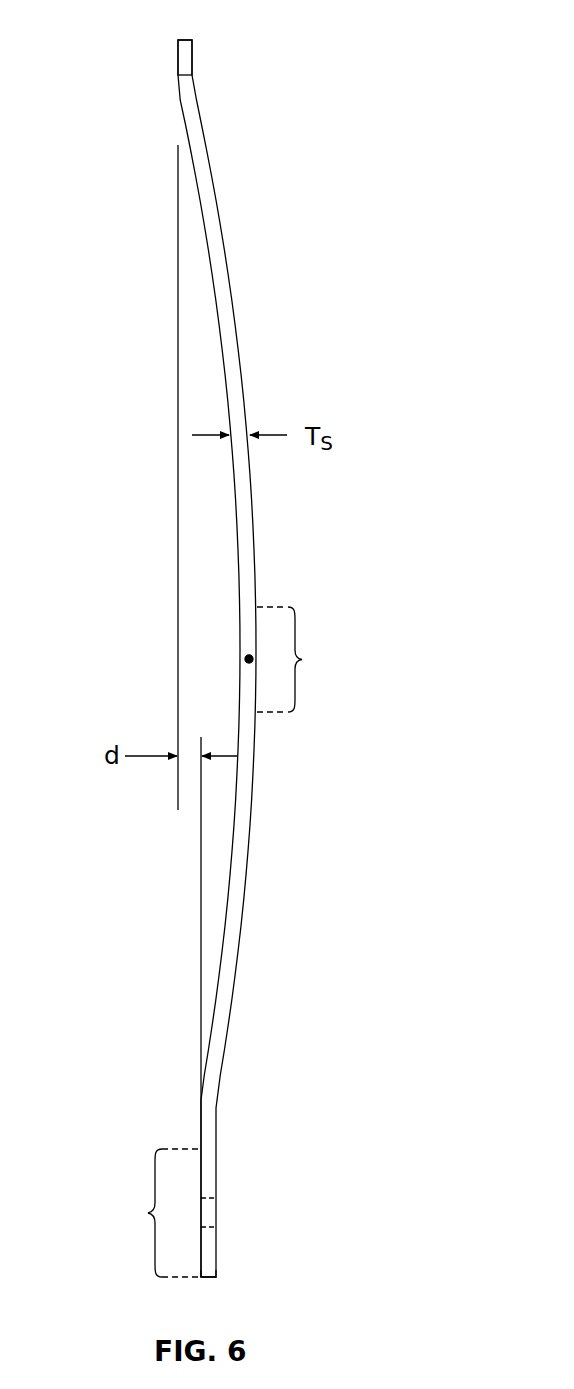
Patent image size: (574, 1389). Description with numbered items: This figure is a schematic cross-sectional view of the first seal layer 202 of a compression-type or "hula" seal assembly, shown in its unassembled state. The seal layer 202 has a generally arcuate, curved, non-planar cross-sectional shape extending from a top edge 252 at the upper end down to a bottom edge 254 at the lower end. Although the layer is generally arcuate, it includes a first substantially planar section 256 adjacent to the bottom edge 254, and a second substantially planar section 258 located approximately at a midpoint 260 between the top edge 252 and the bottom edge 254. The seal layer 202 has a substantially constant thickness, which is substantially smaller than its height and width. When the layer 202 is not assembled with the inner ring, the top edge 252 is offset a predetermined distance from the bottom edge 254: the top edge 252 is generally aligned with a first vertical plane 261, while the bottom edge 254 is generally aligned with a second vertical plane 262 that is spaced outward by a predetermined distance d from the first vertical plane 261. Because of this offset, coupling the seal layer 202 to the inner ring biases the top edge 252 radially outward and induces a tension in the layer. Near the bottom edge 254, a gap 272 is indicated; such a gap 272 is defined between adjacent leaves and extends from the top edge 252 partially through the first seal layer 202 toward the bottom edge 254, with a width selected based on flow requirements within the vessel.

The first seal layer 202 is at (306, 241).
The top edge 252 is at (186, 40).
The bottom edge 254 is at (208, 1278).
The first substantially planar section 256 is at (150, 1213).
The second substantially planar section 258 is at (307, 659).
The midpoint 260 is at (249, 659).
The first vertical plane 261 is at (177, 213).
The second vertical plane 262 is at (200, 980).
The gap 272 is at (208, 1212).